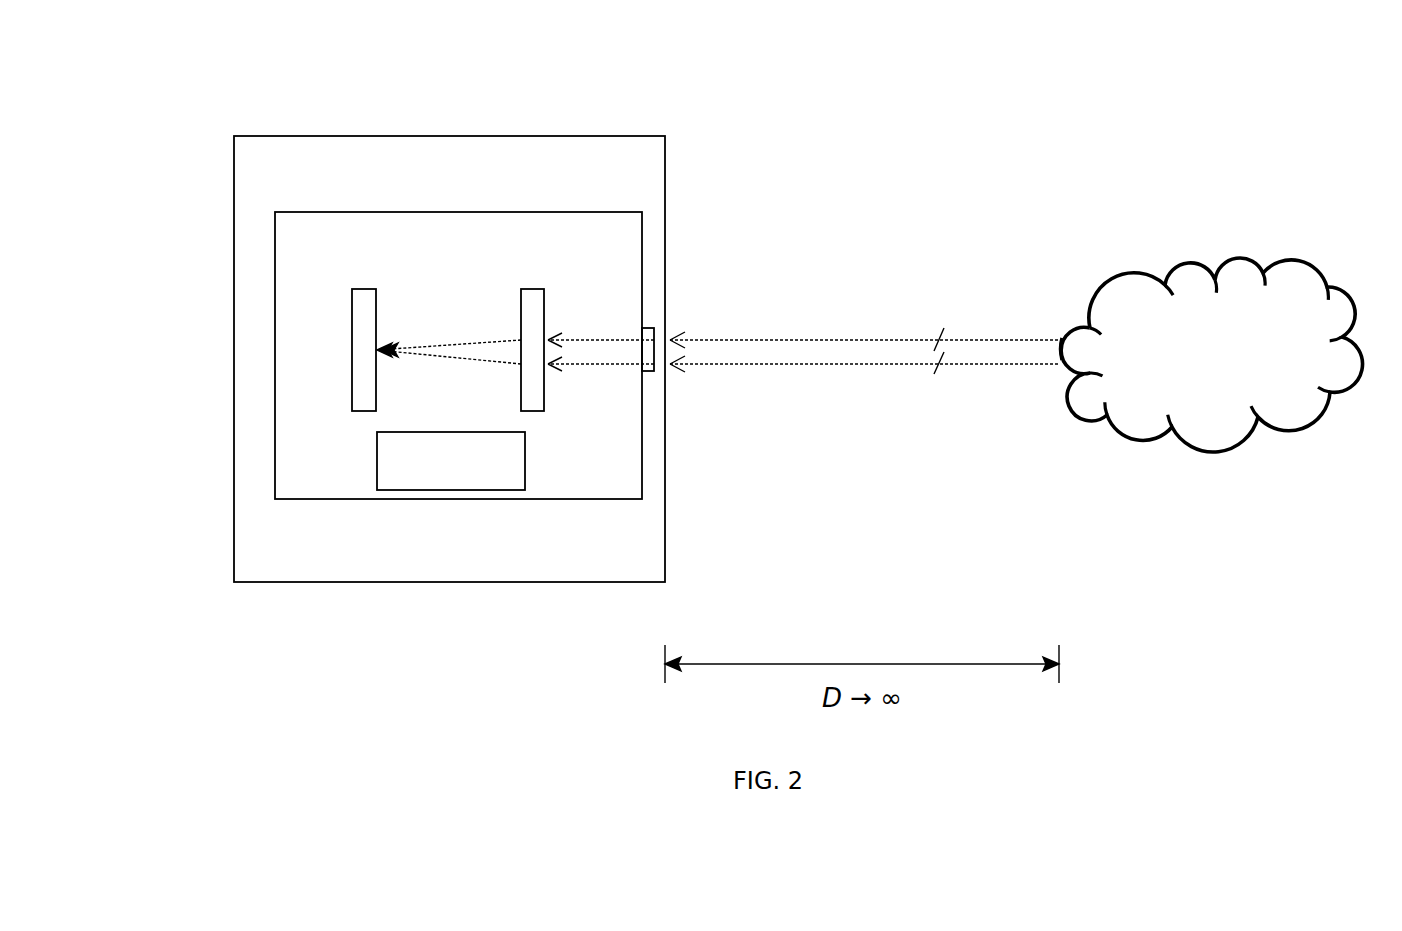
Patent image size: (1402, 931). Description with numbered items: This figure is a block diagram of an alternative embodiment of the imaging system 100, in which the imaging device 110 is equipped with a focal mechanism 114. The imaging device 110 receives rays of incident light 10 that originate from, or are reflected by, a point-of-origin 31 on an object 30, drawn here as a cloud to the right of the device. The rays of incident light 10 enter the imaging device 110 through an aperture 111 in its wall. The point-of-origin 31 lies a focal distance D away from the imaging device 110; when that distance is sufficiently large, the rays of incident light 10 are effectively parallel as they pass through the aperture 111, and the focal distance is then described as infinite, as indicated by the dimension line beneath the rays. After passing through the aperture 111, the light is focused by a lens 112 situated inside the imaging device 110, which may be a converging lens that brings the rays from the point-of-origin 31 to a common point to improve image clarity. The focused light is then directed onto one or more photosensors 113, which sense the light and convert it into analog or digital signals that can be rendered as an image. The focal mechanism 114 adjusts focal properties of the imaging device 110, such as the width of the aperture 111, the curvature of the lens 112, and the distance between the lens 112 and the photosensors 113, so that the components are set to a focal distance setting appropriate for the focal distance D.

The imaging system 100 is at (449, 135).
The imaging device 110 is at (275, 355).
The aperture 111 is at (647, 371).
The lens 112 is at (532, 411).
The photosensors 113 is at (365, 289).
The focal mechanism 114 is at (452, 490).
The incident light 10 is at (862, 339).
The object 30 is at (1212, 271).
The point-of-origin 31 is at (1061, 347).